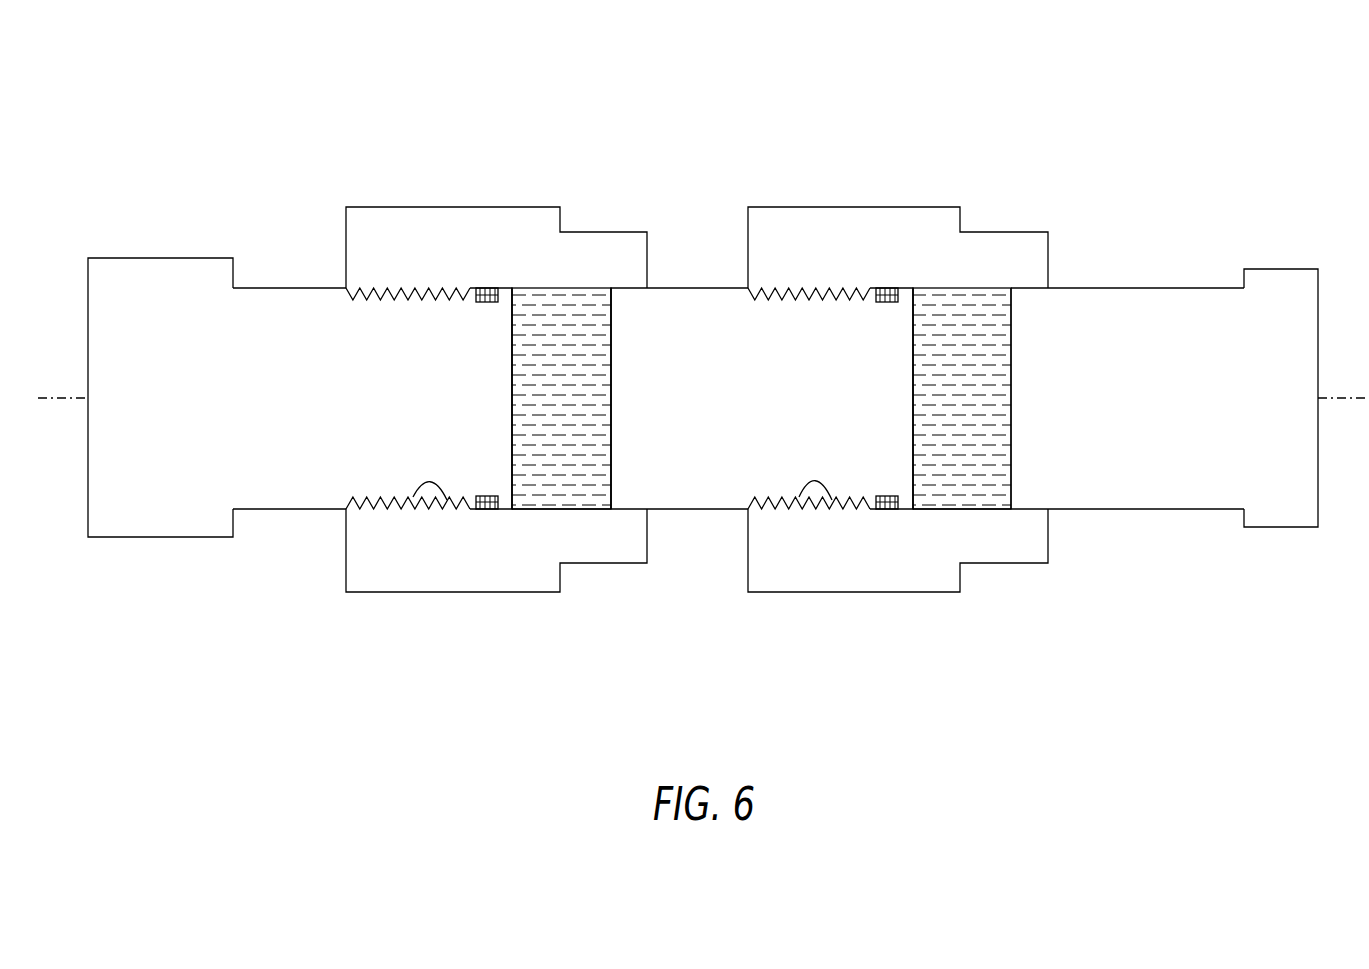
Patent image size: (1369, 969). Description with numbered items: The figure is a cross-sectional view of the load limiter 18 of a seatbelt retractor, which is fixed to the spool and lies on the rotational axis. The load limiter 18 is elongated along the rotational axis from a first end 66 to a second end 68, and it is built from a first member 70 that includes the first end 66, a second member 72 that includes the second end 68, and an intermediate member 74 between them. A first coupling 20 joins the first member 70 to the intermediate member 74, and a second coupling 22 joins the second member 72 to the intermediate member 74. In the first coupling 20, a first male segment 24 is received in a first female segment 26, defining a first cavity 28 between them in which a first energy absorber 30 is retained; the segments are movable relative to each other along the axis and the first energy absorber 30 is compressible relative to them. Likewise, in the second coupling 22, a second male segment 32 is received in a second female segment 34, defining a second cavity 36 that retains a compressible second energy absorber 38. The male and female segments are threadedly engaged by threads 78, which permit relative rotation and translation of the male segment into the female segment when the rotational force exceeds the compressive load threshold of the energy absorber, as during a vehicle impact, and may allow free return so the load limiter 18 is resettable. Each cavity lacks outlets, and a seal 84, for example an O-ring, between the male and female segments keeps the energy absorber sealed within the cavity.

The load limiter 18 is at (1100, 102).
The first coupling 20 is at (390, 618).
The second coupling 22 is at (787, 618).
The first male segment 24 is at (512, 337).
The first female segment 26 is at (611, 452).
The first cavity 28 is at (568, 335).
The first energy absorber 30 is at (570, 465).
The second male segment 32 is at (913, 337).
The second female segment 34 is at (1011, 452).
The second cavity 36 is at (970, 335).
The second energy absorber 38 is at (972, 465).
The first end 66 is at (159, 205).
The second end 68 is at (1274, 205).
The first member 70 is at (268, 305).
The second member 72 is at (1155, 305).
The intermediate member 74 is at (690, 305).
The thread 78 is at (406, 293).
The seal 84 is at (487, 290).